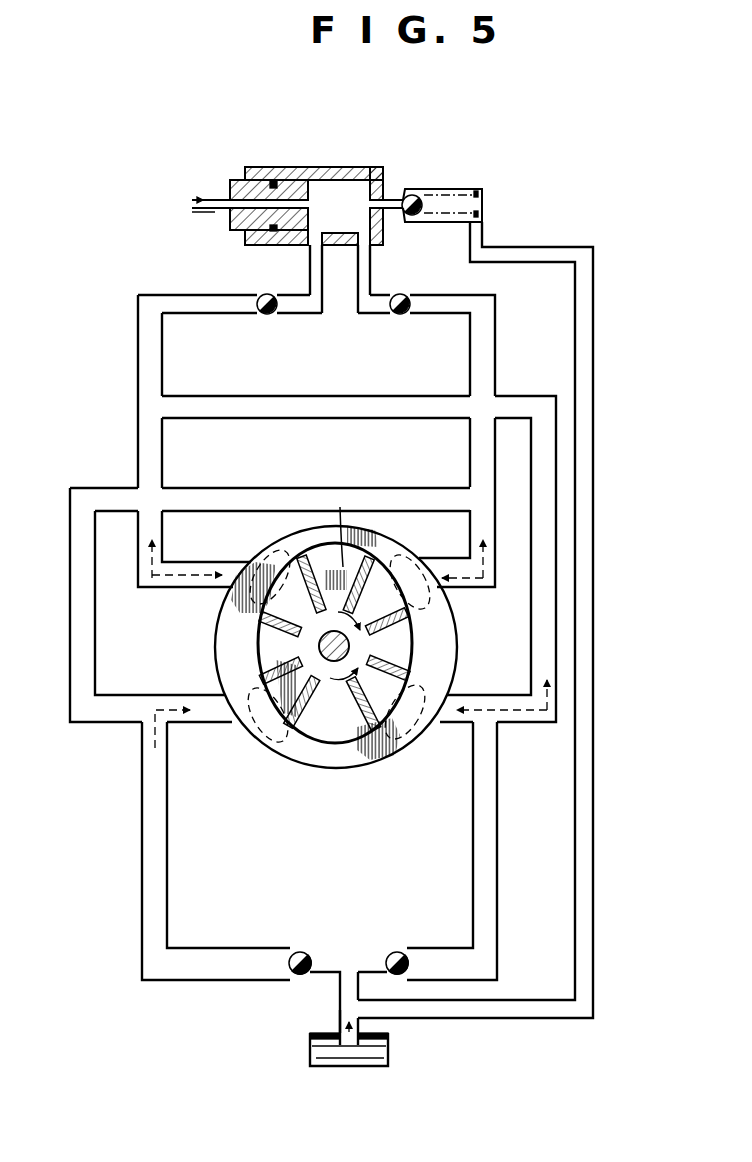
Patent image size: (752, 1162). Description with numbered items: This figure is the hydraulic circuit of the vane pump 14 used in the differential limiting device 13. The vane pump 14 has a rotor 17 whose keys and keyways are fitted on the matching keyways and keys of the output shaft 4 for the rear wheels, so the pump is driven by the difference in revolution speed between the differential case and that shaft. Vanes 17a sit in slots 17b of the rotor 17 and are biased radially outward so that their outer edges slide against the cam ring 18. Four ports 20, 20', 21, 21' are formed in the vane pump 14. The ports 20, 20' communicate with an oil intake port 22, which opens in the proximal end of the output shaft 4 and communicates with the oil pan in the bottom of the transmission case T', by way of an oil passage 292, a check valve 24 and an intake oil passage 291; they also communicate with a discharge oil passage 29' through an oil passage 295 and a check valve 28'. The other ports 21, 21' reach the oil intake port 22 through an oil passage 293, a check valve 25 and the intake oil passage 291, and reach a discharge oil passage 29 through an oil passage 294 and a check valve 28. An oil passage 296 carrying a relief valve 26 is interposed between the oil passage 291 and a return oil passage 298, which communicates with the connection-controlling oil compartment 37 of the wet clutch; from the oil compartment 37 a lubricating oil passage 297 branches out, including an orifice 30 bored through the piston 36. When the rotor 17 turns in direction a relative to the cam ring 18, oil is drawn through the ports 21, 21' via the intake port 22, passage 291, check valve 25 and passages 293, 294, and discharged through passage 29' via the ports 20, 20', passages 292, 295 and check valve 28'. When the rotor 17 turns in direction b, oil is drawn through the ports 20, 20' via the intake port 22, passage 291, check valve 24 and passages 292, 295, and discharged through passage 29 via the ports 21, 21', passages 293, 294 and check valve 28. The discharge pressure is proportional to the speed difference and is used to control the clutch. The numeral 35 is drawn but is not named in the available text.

The output shaft for the rear wheels 4 is at (322, 650).
The differential limiting device 13 is at (325, 185).
The vane pump 14 is at (297, 522).
The rotor 17 is at (350, 543).
The vanes 17a is at (386, 612).
The slots 17b is at (372, 628).
The cam ring 18 is at (376, 545).
The port 20 is at (421, 573).
The port 20' is at (255, 731).
The port 21 is at (260, 564).
The port 21' is at (409, 727).
The oil intake port 22 is at (340, 1032).
The check valve 24 is at (300, 952).
The check valve 25 is at (397, 952).
The relief valve 26 is at (416, 198).
The check valve 28 is at (249, 323).
The check valve 28' is at (405, 327).
The discharge oil passage 29 is at (291, 279).
The discharge oil passage 29' is at (401, 279).
The orifice 30 is at (199, 200).
The valve body 35 is at (352, 167).
The piston 36 is at (254, 180).
The oil compartment 37 is at (380, 198).
The intake oil passage 291 is at (340, 1003).
The oil passage 292 is at (142, 860).
The oil passage 293 is at (497, 852).
The oil passage 294 is at (138, 468).
The oil passage 295 is at (497, 490).
The oil passage 296 is at (527, 1000).
The lubricating oil passage 297 is at (213, 209).
The return oil passage 298 is at (398, 212).
The transmission case T' is at (370, 1049).